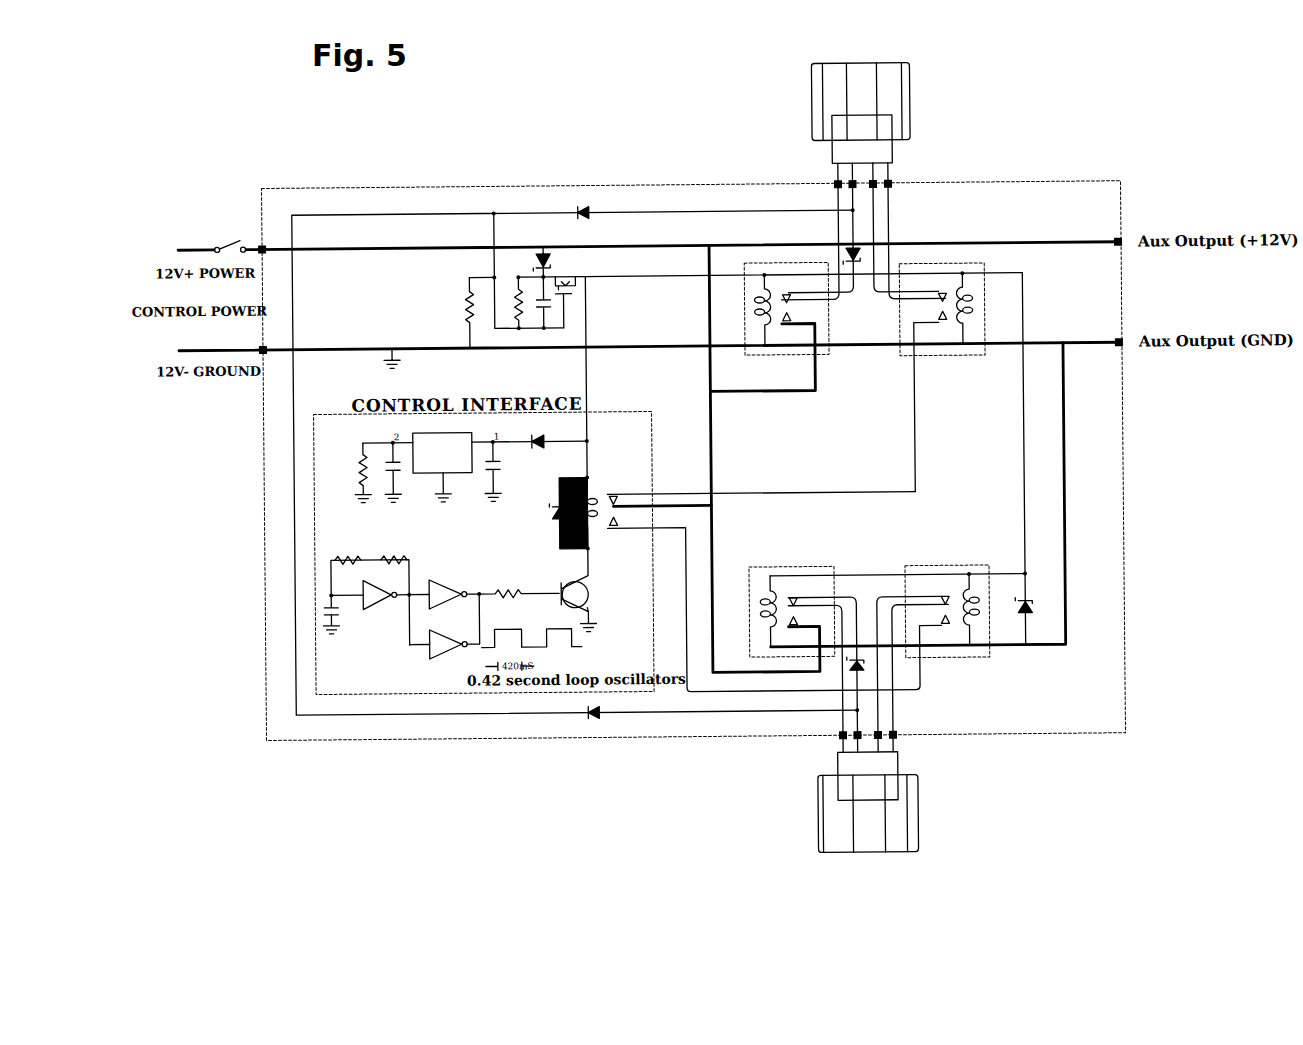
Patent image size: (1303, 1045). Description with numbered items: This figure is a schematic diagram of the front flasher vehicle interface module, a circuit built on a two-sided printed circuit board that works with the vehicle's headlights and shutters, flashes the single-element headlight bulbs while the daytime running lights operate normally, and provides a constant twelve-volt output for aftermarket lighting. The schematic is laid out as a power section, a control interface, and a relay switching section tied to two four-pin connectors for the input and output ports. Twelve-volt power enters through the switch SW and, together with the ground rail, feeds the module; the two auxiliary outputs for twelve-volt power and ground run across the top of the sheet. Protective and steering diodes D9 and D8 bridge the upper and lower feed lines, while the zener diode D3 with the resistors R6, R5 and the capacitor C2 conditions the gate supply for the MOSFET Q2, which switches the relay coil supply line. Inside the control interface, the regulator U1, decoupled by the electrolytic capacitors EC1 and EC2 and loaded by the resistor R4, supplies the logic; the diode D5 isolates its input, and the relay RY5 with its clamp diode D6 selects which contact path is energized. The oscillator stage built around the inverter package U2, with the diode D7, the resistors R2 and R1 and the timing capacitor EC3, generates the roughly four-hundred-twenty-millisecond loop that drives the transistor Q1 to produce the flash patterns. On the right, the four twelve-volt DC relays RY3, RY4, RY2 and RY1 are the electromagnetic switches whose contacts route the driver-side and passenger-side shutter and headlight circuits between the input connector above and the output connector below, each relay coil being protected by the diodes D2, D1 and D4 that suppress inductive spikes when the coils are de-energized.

The power switch SW is at (212, 242).
The diode D9 is at (591, 217).
The diode D8 is at (600, 716).
The zener diode D3 is at (533, 262).
The zener diode D2 is at (840, 256).
The zener diode D1 is at (847, 664).
The zener diode D4 is at (1034, 604).
The diode D5 is at (547, 446).
The zener diode D6 is at (563, 513).
The diode D7 is at (348, 556).
The resistor R6 is at (461, 313).
The resistor R5 is at (511, 302).
The resistor R4 is at (359, 473).
The resistor R2 is at (394, 555).
The resistor R1 is at (519, 589).
The capacitor C2 is at (540, 302).
The electrolytic capacitor EC1 is at (501, 472).
The electrolytic capacitor EC2 is at (401, 473).
The electrolytic capacitor EC3 is at (340, 614).
The MOSFET transistor Q2 is at (566, 296).
The transistor Q1 is at (586, 589).
The voltage regulator U1 is at (443, 463).
The inverter oscillator IC U2 is at (415, 620).
The relay RY1 is at (799, 608).
The relay RY2 is at (792, 605).
The relay RY3 is at (786, 303).
The relay RY4 is at (942, 371).
The relay RY5 is at (748, 512).